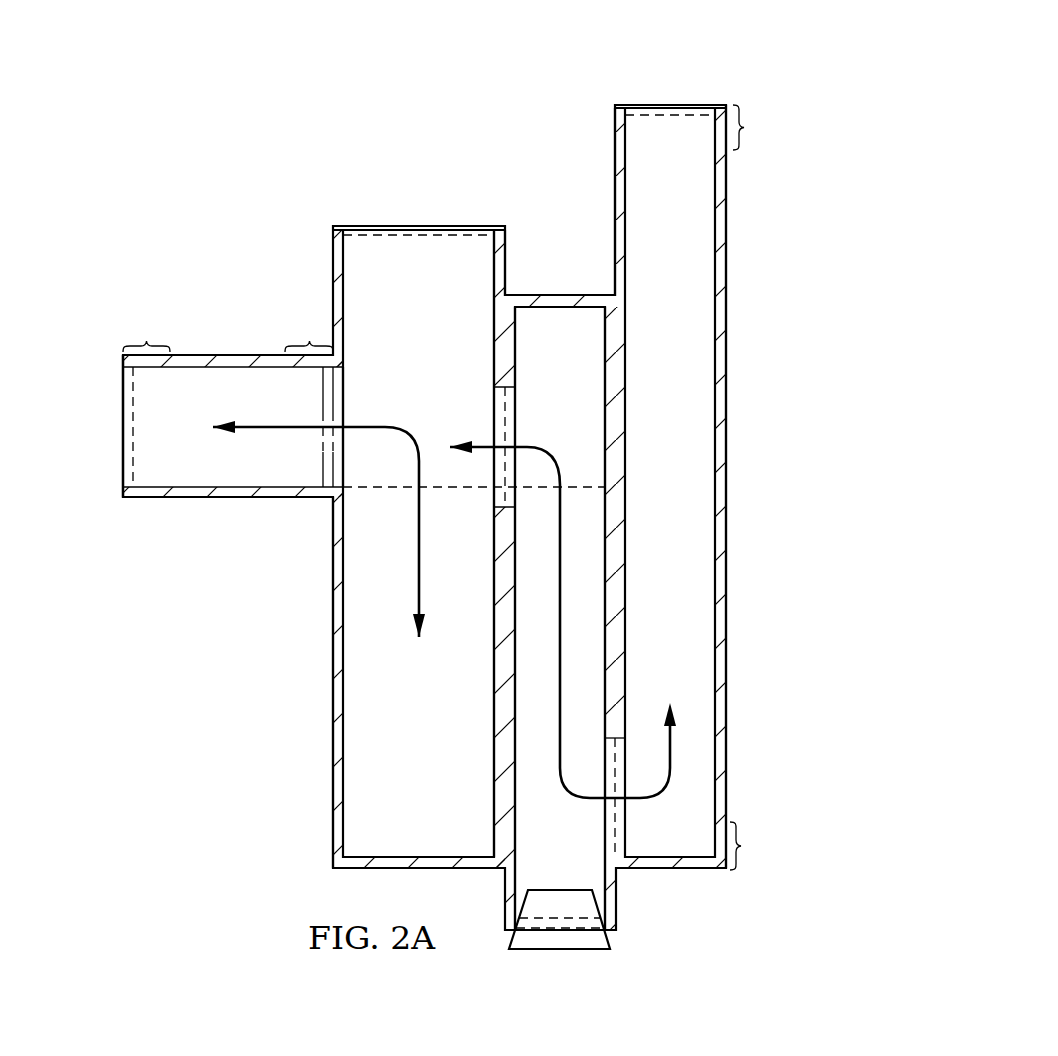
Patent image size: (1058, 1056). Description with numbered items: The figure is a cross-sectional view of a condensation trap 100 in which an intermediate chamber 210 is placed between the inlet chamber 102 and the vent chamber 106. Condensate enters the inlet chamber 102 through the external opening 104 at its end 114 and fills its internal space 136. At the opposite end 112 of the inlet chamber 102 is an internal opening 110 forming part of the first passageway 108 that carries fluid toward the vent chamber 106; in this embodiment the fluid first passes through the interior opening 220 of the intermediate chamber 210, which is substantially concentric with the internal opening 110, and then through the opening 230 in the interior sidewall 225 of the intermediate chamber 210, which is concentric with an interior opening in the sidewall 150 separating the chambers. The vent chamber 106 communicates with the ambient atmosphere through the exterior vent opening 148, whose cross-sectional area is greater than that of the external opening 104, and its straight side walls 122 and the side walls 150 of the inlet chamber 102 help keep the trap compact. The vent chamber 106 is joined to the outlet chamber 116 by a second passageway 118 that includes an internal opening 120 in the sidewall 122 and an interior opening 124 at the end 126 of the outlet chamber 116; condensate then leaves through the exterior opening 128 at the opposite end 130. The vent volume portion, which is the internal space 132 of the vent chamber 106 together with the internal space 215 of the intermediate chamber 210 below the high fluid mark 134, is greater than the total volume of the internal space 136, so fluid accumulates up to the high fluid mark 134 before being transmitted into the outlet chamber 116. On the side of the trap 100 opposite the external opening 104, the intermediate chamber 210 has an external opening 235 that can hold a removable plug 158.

The trap 100 is at (195, 63).
The inlet chamber 102 is at (645, 82).
The external opening 104 is at (693, 104).
The vent chamber 106 is at (353, 195).
The first passageway 108 is at (672, 737).
The internal opening 110 is at (620, 820).
The opposite end 112 is at (761, 846).
The end 114 is at (762, 127).
The outlet chamber 116 is at (222, 335).
The second passageway 118 is at (265, 425).
The internal opening 120 is at (348, 397).
The sidewall 122 is at (333, 695).
The interior opening 124 is at (327, 457).
The end 126 is at (309, 332).
The exterior opening 128 is at (123, 472).
The opposite end 130 is at (146, 332).
The internal space 132 is at (435, 769).
The high fluid mark 134 is at (450, 490).
The internal space 136 is at (686, 409).
The exterior vent opening 148 is at (453, 229).
The side wall 150 is at (726, 268).
The removable plug 158 is at (583, 949).
The intermediate chamber 210 is at (565, 278).
The internal space 215 is at (576, 352).
The interior opening 220 is at (605, 846).
The interior sidewall 225 is at (515, 808).
The opening 230 is at (510, 412).
The external opening 235 is at (542, 928).